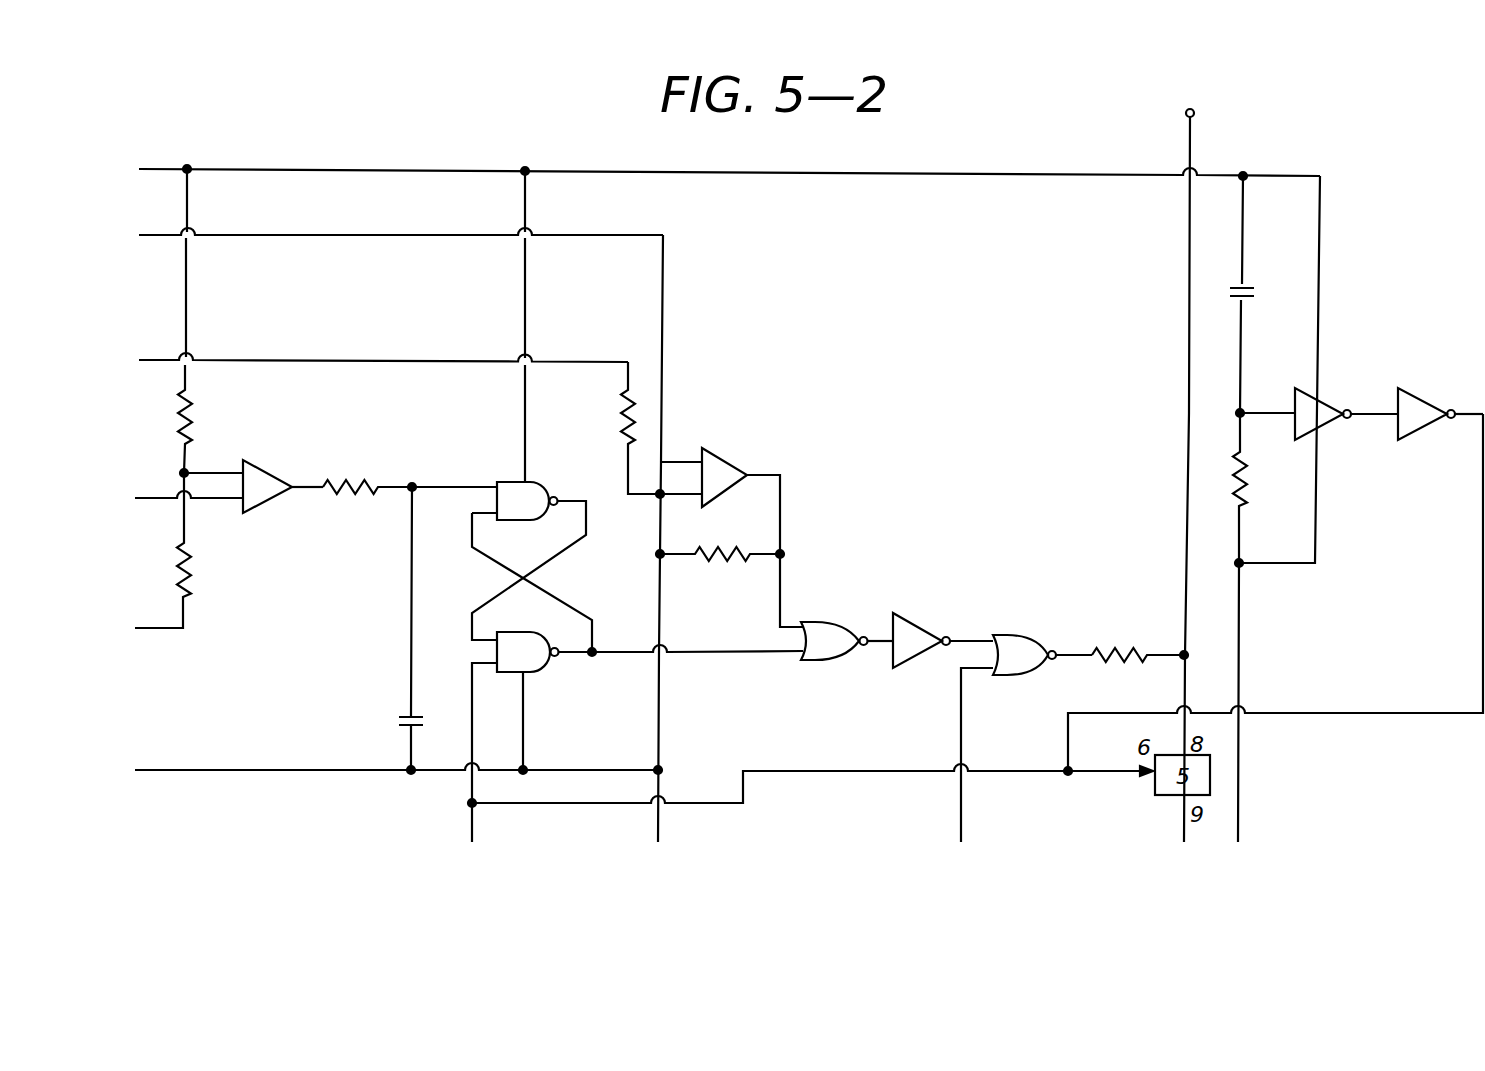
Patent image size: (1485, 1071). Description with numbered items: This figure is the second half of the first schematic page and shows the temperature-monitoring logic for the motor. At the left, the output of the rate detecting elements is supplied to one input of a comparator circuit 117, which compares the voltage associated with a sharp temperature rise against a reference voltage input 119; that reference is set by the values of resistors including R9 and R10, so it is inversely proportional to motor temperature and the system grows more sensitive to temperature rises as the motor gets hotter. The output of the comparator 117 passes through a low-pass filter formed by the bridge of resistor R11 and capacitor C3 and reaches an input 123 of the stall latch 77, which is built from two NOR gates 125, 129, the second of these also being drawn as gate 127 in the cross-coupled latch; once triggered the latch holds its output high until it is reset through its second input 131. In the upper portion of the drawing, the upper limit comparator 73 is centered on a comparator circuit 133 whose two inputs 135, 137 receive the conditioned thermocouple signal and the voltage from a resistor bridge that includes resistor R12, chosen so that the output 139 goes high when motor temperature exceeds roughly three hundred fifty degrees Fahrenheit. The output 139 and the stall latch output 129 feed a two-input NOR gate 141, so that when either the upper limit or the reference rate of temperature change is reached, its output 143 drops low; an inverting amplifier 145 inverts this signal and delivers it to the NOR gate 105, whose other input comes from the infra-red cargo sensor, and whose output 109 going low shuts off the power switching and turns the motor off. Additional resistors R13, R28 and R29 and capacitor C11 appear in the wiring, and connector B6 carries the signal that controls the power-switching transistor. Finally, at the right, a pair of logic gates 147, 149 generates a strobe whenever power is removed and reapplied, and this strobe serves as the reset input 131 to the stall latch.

The upper limit comparator 73 is at (782, 437).
The stall latch 77 is at (557, 390).
The two-input NOR gate 105 is at (1010, 633).
The output of the NOR gate 109 is at (1068, 660).
The comparator circuit 117 is at (258, 466).
The reference voltage input 119 is at (184, 473).
The input of the stall latch 123 is at (440, 487).
The NOR gate 125 is at (536, 482).
The NAND gate 127 is at (497, 652).
The NOR gate 129 is at (625, 656).
The second input to the stall latch 131 is at (470, 786).
The comparator circuit 133 is at (705, 453).
The input of the upper limit comparator 135 is at (663, 263).
The input of the upper limit comparator 137 is at (627, 473).
The output of the upper limit comparator 139 is at (780, 520).
The two-input NOR gate 141 is at (815, 678).
The output of the NOR gate 143 is at (882, 650).
The inverting amplifier 145 is at (915, 675).
The logic gate 147 is at (1333, 419).
The logic gate 149 is at (1420, 393).
The resistor R9 is at (184, 550).
The resistor R10 is at (208, 429).
The resistor R11 is at (367, 466).
The resistor R12 is at (606, 416).
The resistor R13 is at (720, 572).
The resistor R28 is at (1138, 639).
The resistor R29 is at (1276, 509).
The capacitor C3 is at (396, 630).
The capacitor C11 is at (1270, 292).
The connector B6 is at (1192, 462).